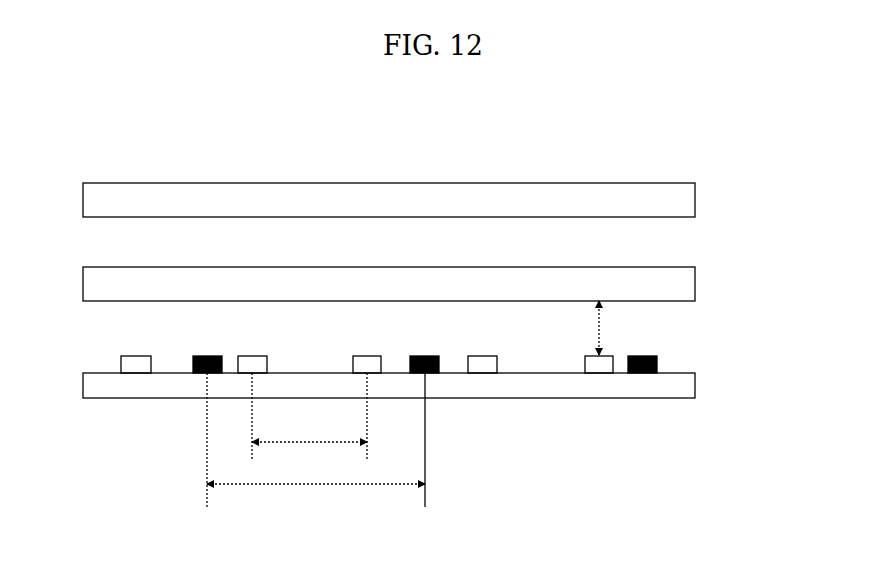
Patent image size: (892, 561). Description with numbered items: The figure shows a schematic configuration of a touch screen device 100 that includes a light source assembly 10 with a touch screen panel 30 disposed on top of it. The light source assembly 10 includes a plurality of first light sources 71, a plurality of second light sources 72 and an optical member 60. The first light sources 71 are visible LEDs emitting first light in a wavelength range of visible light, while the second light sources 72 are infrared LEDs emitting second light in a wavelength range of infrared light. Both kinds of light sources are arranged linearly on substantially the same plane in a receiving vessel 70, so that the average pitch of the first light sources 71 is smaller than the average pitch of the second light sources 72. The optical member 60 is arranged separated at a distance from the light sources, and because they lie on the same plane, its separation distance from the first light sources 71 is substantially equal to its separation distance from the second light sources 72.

The touch screen device 100 is at (596, 152).
The touch screen panel 30 is at (687, 198).
The light source assembly 10 is at (757, 288).
The optical member 60 is at (687, 282).
The receiving vessel 70 is at (687, 385).
The first light sources 71 is at (353, 368).
The second light sources 72 is at (439, 367).